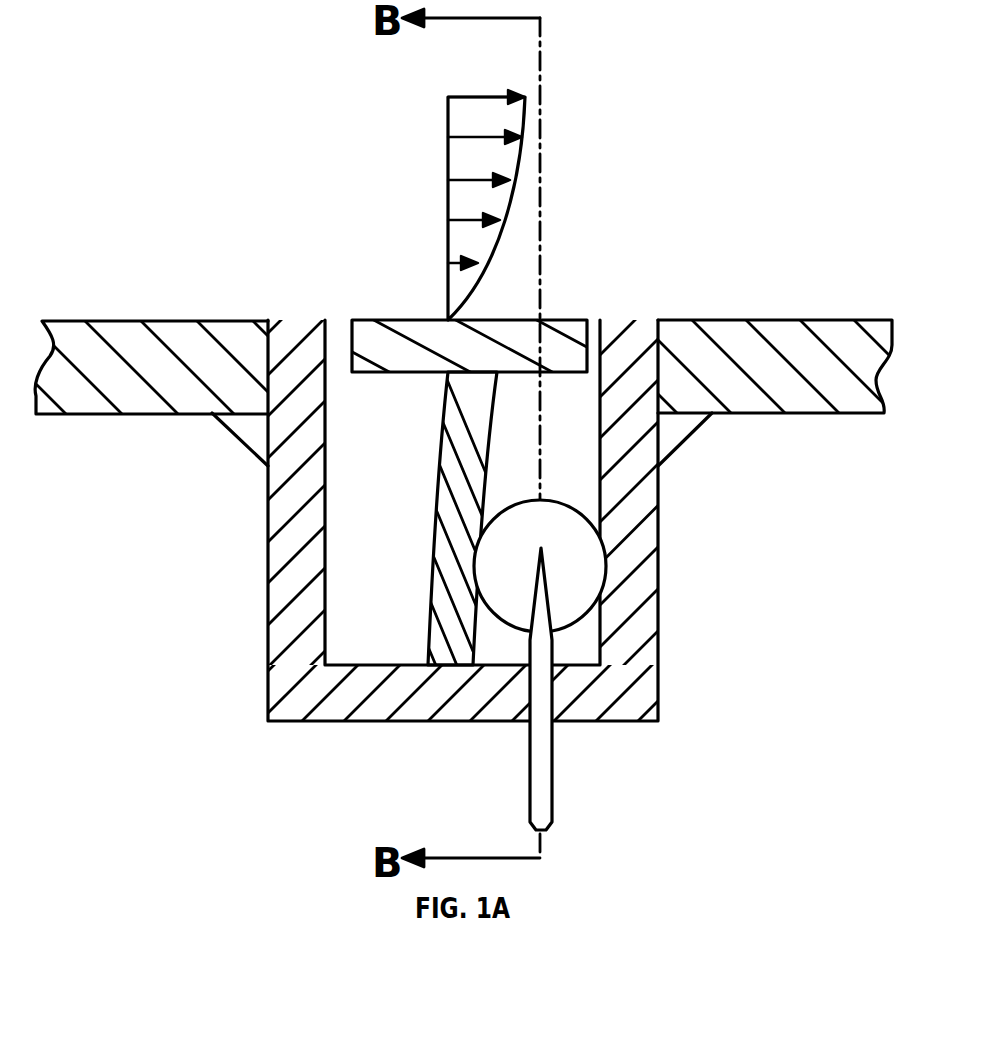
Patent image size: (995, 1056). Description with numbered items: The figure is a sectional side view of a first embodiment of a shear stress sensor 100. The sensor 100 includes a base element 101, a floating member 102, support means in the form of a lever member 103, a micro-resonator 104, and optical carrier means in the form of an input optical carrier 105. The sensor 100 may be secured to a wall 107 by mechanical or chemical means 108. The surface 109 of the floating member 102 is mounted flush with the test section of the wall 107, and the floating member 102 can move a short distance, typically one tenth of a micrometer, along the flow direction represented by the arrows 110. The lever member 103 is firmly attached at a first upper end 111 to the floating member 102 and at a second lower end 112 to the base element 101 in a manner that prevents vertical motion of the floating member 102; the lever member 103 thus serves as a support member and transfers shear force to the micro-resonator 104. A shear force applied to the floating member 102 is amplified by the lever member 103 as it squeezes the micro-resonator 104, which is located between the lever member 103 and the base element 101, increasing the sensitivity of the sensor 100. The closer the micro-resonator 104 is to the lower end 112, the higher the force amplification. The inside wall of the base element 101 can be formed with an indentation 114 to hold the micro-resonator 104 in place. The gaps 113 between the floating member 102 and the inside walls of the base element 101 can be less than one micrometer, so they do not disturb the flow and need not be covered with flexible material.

The shear stress sensor 100 is at (111, 653).
The base element 101 is at (290, 722).
The floating member 102 is at (410, 335).
The lever member 103 is at (437, 560).
The micro-resonator 104 is at (556, 515).
The input optical carrier 105 is at (553, 770).
The wall 107 is at (165, 320).
The mechanical or chemical means 108 is at (213, 446).
The surface 109 is at (523, 318).
The arrows 110 is at (486, 184).
The first upper end 111 is at (457, 376).
The second lower end 112 is at (450, 665).
The gaps 113 is at (345, 322).
The indentation 114 is at (607, 588).